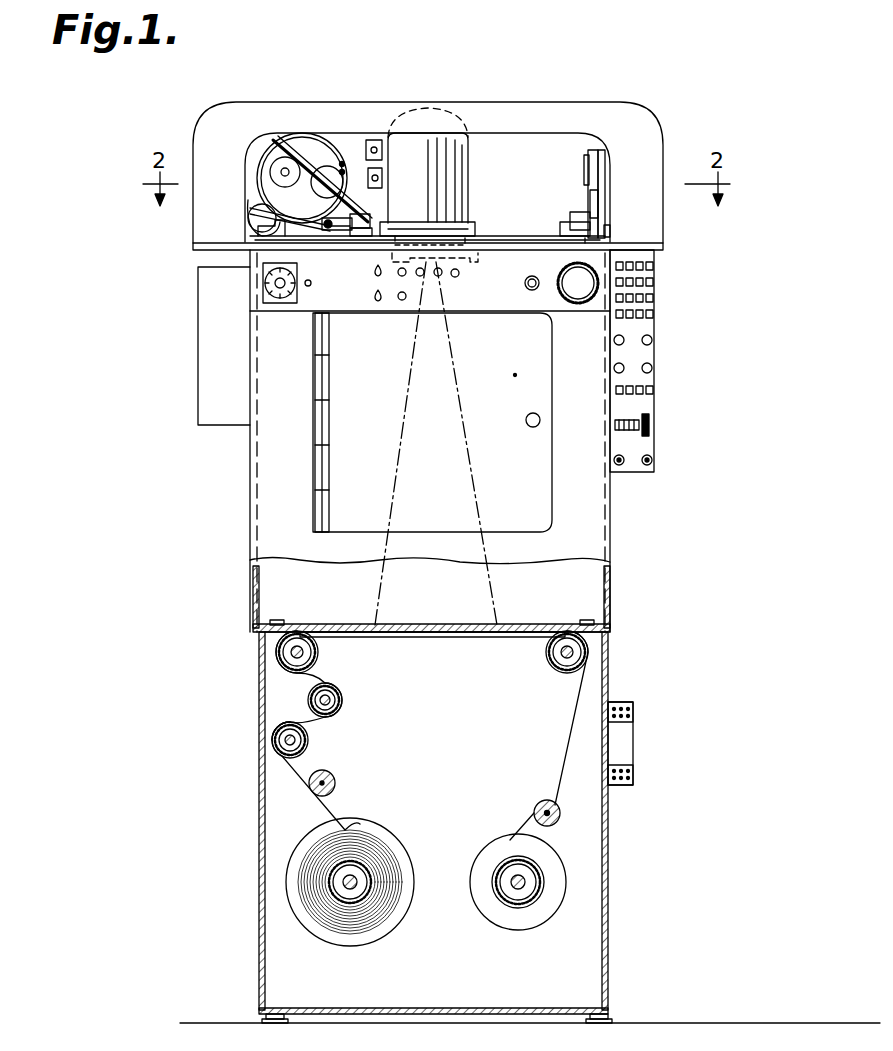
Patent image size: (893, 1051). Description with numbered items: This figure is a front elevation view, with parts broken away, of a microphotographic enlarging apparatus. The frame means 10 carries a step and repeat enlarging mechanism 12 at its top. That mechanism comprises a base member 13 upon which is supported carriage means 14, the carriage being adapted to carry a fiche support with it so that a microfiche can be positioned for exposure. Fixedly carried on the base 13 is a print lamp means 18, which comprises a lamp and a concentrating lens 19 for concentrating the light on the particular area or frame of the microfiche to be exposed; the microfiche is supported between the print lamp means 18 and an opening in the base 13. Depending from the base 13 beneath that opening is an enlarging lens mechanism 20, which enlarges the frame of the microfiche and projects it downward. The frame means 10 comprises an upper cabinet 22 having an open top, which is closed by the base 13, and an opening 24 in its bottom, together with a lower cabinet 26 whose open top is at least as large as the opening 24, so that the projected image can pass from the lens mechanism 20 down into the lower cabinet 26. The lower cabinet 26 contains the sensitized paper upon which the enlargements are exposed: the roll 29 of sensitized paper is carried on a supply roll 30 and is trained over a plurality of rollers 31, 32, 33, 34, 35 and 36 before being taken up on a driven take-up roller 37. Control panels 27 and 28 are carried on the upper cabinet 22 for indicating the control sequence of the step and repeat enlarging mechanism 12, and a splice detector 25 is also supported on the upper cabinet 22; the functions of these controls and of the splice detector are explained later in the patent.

The frame means 10 is at (226, 455).
The step and repeat enlarging mechanism 12 is at (612, 102).
The base member 13 is at (662, 246).
The carriage means 14 is at (500, 230).
The print lamp means 18 is at (455, 180).
The concentrating lens 19 is at (447, 225).
The enlarging lens mechanism 20 is at (440, 275).
The upper cabinet 22 is at (258, 358).
The opening 24 is at (370, 628).
The splice detector 25 is at (213, 407).
The lower cabinet 26 is at (270, 841).
The control panel 27 is at (648, 355).
The control panel 28 is at (252, 280).
The roll of sensitized paper 29 is at (422, 634).
The supply roll 30 is at (335, 900).
The roller 31 is at (334, 781).
The roller 32 is at (308, 742).
The roller 33 is at (341, 703).
The roller 34 is at (318, 653).
The roller 35 is at (552, 666).
The roller 36 is at (553, 805).
The take-up roller 37 is at (505, 905).